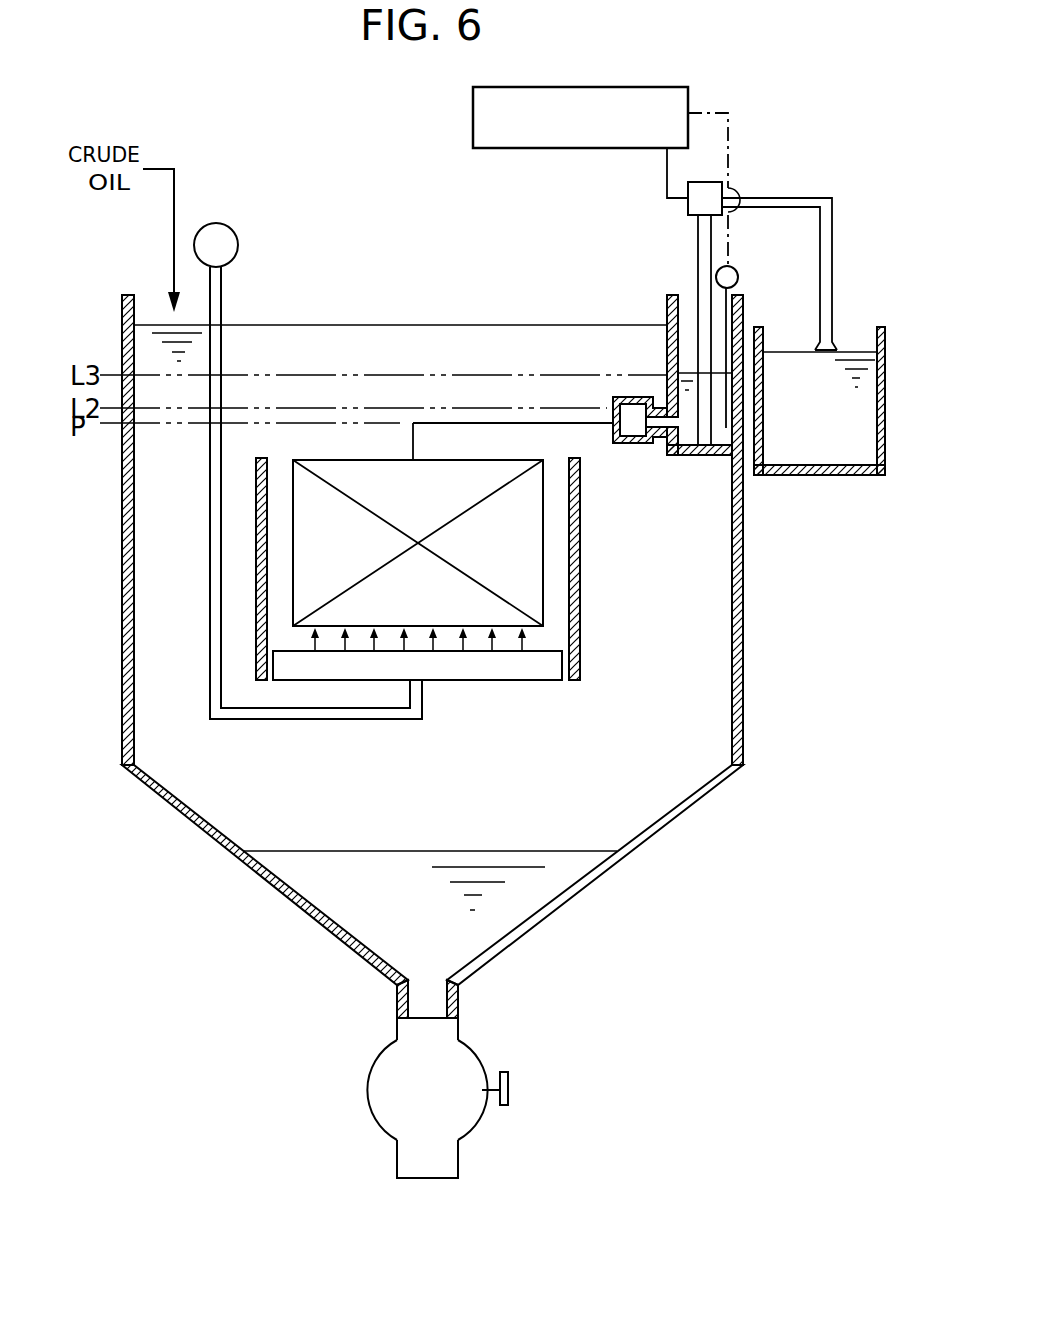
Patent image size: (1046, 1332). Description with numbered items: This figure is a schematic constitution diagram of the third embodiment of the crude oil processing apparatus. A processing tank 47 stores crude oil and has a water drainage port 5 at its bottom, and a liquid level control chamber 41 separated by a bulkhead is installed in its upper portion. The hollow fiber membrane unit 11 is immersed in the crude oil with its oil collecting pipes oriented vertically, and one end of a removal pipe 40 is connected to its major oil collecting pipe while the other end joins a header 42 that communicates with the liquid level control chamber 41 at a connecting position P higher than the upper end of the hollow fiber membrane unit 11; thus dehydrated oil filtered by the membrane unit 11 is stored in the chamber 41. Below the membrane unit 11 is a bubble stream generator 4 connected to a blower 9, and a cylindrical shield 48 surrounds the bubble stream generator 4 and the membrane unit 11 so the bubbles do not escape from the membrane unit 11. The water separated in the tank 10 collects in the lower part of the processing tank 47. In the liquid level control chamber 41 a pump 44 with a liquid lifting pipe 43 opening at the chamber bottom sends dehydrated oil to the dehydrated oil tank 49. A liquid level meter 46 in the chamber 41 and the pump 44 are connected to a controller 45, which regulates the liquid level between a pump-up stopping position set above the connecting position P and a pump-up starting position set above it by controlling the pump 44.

The bubble stream generator 4 is at (538, 665).
The water drainage port 5 is at (426, 1179).
The blower 9 is at (238, 244).
The separated water 10 is at (552, 890).
The hollow fiber membrane unit 11 is at (298, 553).
The removal pipe 40 is at (597, 434).
The liquid level control chamber 41 is at (658, 316).
The header 42 is at (624, 397).
The liquid lifting pipe 43 is at (713, 455).
The pump 44 is at (707, 182).
The controller 45 is at (690, 85).
The liquid level meter 46 is at (739, 280).
The processing tank 47 is at (121, 512).
The cylindrical shield 48 is at (256, 637).
The dehydrated oil tank 49 is at (887, 355).